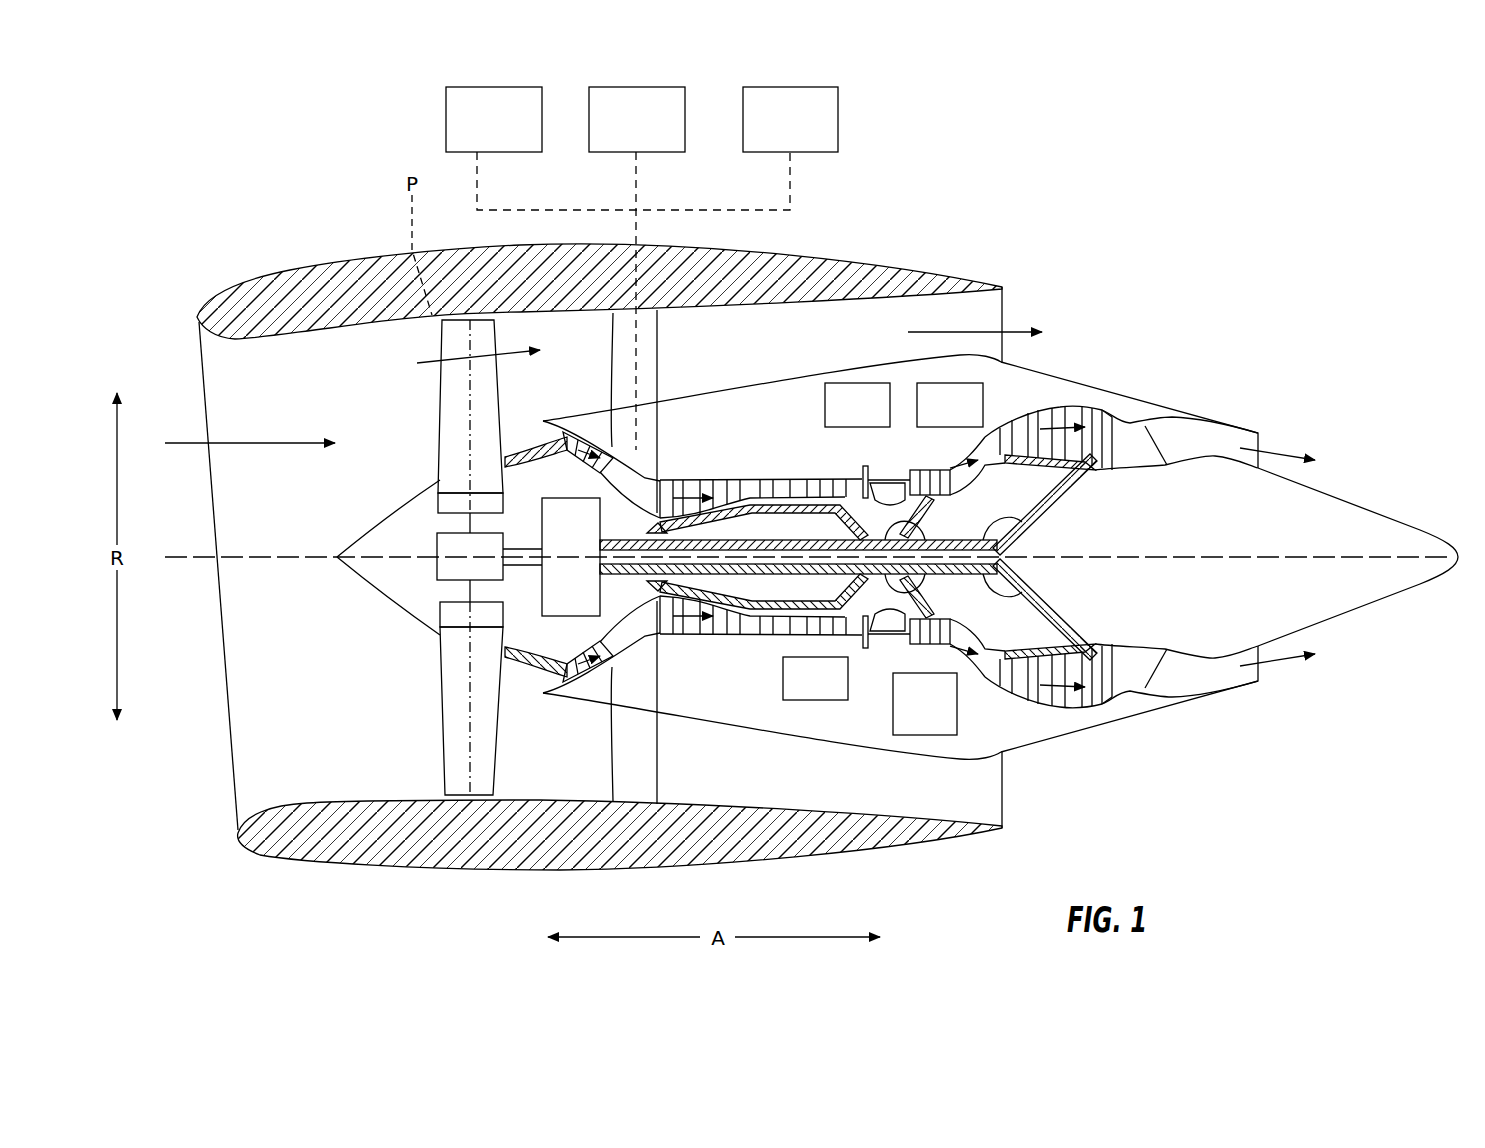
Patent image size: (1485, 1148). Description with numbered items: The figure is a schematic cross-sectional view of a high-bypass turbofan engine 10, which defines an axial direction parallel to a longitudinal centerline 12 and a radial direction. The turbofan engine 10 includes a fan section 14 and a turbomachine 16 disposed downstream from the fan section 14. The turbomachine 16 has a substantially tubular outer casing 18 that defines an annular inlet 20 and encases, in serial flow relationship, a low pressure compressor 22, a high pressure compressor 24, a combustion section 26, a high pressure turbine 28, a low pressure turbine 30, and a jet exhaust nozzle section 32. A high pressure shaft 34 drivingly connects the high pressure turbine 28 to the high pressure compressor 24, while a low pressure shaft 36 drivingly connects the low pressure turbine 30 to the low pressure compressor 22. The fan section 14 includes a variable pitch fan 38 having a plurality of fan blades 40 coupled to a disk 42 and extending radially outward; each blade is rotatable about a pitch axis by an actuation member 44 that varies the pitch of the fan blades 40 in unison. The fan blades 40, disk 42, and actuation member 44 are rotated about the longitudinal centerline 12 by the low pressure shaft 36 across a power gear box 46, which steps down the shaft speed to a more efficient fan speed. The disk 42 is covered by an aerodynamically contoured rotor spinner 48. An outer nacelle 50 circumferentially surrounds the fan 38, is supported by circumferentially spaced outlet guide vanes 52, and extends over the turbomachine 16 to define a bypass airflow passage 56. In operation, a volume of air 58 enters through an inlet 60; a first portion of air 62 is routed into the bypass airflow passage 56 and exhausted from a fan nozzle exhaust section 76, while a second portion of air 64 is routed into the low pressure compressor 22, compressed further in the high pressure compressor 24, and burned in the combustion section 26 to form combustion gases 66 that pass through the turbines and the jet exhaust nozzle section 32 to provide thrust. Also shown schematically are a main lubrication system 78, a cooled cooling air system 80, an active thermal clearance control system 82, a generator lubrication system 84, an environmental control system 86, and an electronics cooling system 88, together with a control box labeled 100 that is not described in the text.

The turbofan engine 10 is at (1165, 262).
The longitudinal centerline 12 is at (1190, 557).
The fan section 14 is at (390, 345).
The turbomachine 16 is at (797, 430).
The outer casing 18 is at (845, 745).
The annular inlet 20 is at (555, 675).
The low pressure compressor 22 is at (612, 620).
The high pressure compressor 24 is at (690, 620).
The combustion section 26 is at (885, 630).
The high pressure turbine 28 is at (955, 640).
The low pressure turbine 30 is at (1095, 700).
The jet exhaust nozzle section 32 is at (1160, 683).
The high pressure shaft 34 is at (925, 500).
The low pressure shaft 36 is at (1010, 520).
The variable pitch fan 38 is at (400, 617).
The fan blades 40 is at (437, 728).
The disk 42 is at (443, 505).
The actuation member 44 is at (432, 545).
The power gear box 46 is at (577, 515).
The rotor spinner 48 is at (337, 557).
The outer nacelle 50 is at (490, 875).
The outlet guide vanes 52 is at (660, 345).
The bypass airflow passage 56 is at (733, 347).
The volume of air 58 is at (190, 443).
The inlet 60 is at (235, 798).
The first portion of air 62 is at (437, 392).
The second portion of air 64 is at (525, 435).
The combustion gases 66 is at (1047, 420).
The fan nozzle exhaust section 76 is at (985, 318).
The main lubrication system 78 is at (930, 737).
The cooled cooling air system 80 is at (803, 703).
The active thermal clearance control system 82 is at (910, 383).
The generator lubrication system 84 is at (853, 383).
The environmental control system 86 is at (637, 87).
The electronics cooling system 88 is at (790, 87).
The control system 100 is at (478, 87).